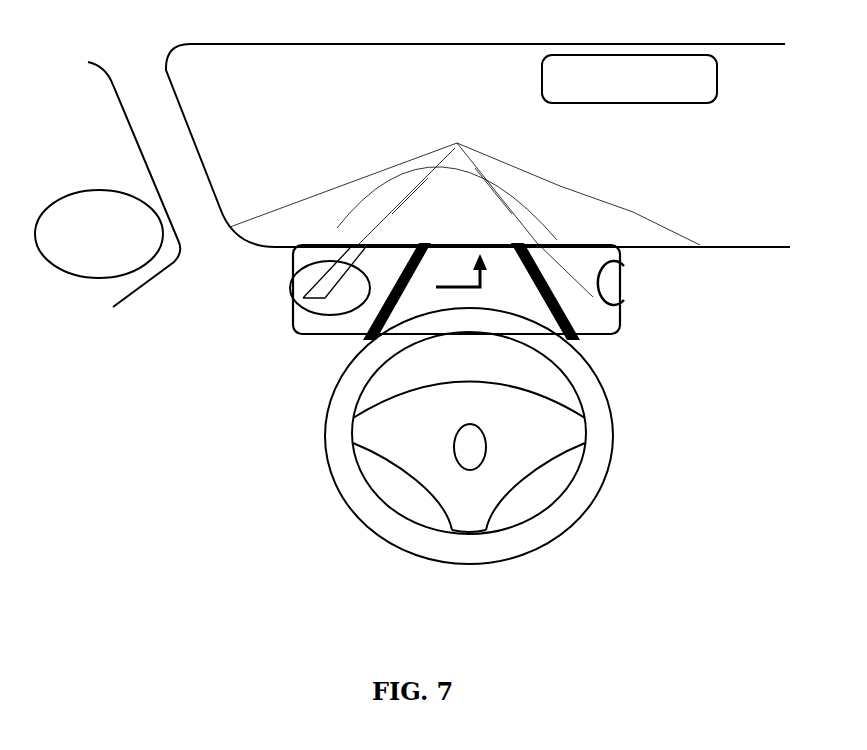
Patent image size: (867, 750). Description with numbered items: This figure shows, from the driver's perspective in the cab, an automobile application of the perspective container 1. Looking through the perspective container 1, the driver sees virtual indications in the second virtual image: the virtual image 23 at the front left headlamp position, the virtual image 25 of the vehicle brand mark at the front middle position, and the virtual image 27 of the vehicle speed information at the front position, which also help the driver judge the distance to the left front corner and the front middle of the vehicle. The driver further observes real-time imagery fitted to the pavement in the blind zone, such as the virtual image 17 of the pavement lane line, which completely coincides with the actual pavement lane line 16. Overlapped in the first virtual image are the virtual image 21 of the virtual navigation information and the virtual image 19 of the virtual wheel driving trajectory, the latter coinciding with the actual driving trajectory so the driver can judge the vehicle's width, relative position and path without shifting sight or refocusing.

The perspective container 1 is at (627, 332).
The pavement lane line 16 is at (376, 245).
The virtual image of the pavement lane line 17 is at (360, 250).
The virtual image of the virtual wheel driving trajectory 19 is at (392, 325).
The virtual image of the virtual navigation information 21 is at (505, 250).
The virtual image at the left headlamp position 23 is at (330, 257).
The virtual image of the vehicle brand mark 25 is at (560, 275).
The virtual image of the vehicle speed information 27 is at (452, 258).